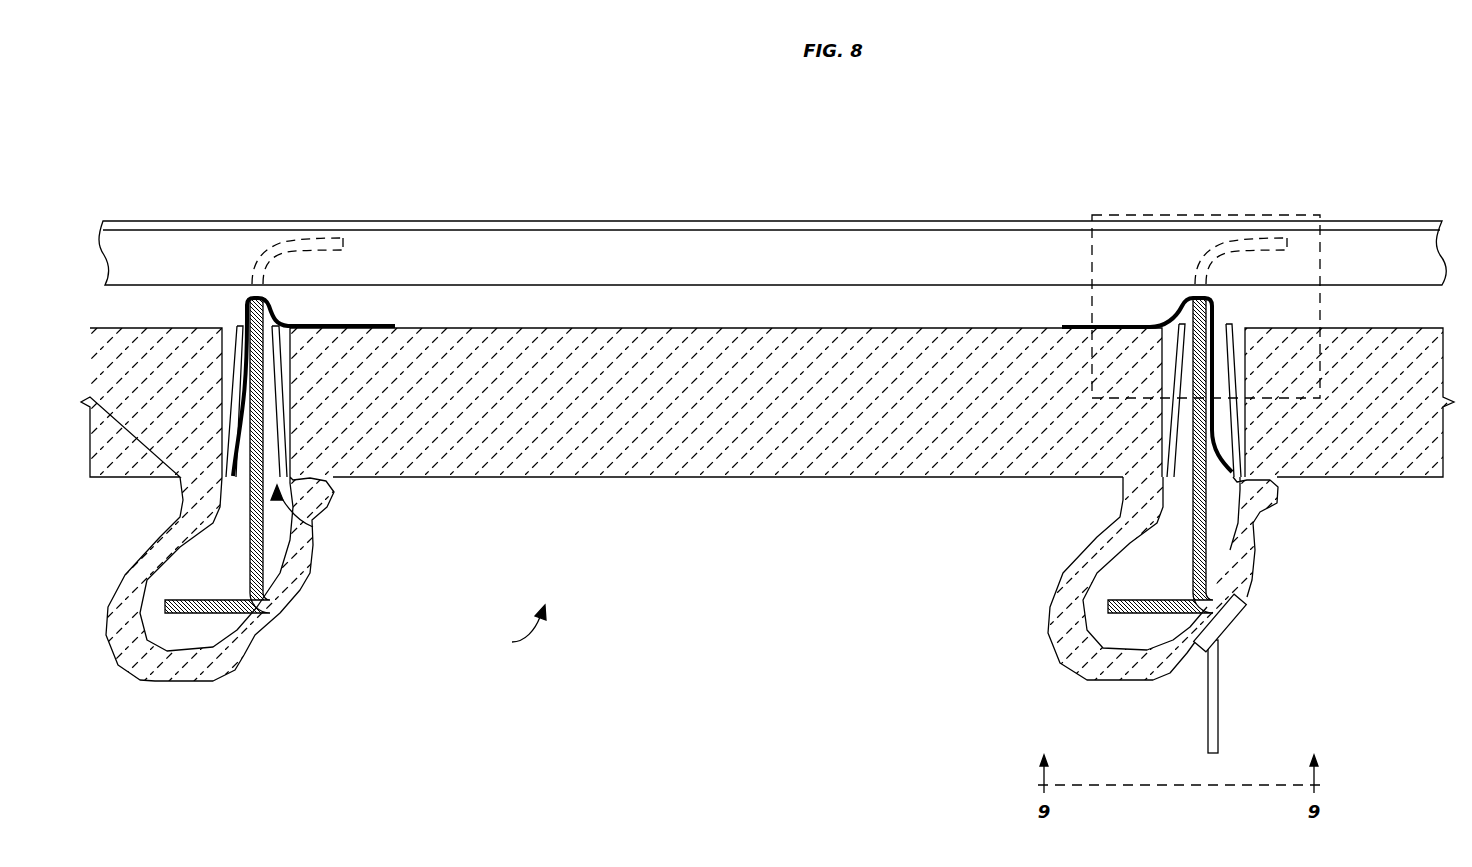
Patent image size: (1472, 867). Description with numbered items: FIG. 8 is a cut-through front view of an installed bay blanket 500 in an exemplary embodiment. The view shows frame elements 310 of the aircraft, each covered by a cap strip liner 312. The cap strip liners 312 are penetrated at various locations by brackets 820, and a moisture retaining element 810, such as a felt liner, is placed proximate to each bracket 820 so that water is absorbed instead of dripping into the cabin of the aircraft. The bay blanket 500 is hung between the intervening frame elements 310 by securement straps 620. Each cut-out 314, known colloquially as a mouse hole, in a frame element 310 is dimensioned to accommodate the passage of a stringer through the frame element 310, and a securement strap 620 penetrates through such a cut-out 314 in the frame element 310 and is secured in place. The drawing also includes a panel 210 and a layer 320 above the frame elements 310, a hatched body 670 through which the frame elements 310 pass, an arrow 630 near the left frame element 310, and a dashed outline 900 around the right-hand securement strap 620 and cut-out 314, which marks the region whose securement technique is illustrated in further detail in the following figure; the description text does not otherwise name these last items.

The panel 210 is at (462, 221).
The cover layer 320 is at (616, 245).
The base body 670 is at (513, 477).
The cap strip liner 312 is at (1127, 681).
The frame element 310 is at (192, 601).
The cut-out 314 is at (246, 297).
The securement strap 620 is at (294, 321).
The insertion direction arrow 630 is at (314, 527).
The detail region 900 is at (1092, 298).
The moisture retaining element 810 is at (1233, 613).
The bracket 820 is at (1213, 675).
The bay blanket 500 is at (510, 629).